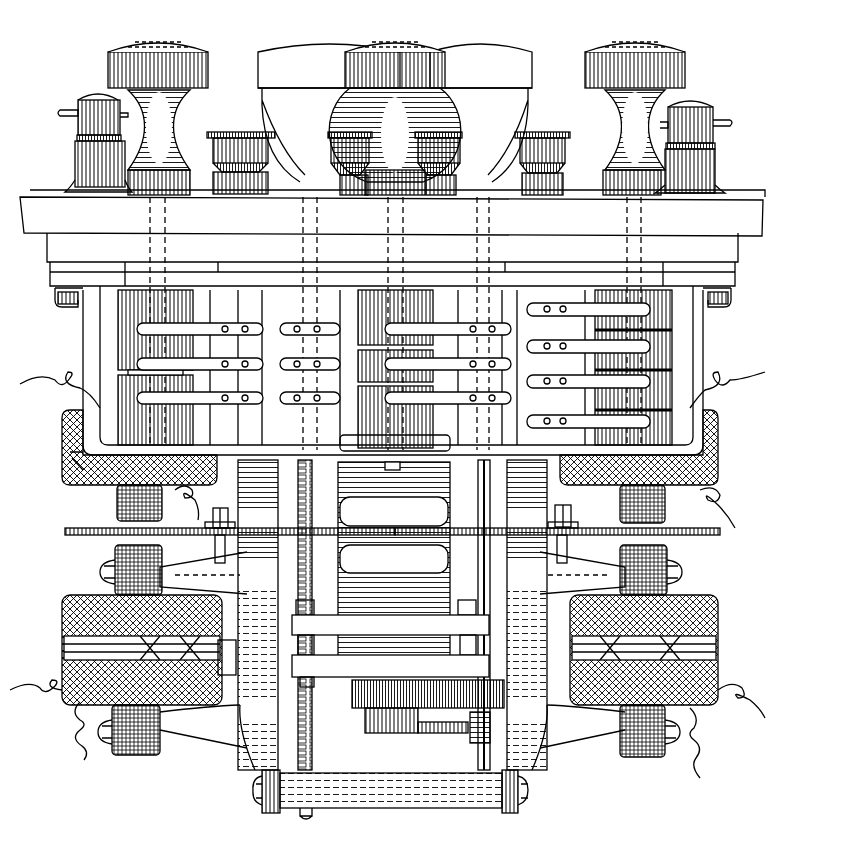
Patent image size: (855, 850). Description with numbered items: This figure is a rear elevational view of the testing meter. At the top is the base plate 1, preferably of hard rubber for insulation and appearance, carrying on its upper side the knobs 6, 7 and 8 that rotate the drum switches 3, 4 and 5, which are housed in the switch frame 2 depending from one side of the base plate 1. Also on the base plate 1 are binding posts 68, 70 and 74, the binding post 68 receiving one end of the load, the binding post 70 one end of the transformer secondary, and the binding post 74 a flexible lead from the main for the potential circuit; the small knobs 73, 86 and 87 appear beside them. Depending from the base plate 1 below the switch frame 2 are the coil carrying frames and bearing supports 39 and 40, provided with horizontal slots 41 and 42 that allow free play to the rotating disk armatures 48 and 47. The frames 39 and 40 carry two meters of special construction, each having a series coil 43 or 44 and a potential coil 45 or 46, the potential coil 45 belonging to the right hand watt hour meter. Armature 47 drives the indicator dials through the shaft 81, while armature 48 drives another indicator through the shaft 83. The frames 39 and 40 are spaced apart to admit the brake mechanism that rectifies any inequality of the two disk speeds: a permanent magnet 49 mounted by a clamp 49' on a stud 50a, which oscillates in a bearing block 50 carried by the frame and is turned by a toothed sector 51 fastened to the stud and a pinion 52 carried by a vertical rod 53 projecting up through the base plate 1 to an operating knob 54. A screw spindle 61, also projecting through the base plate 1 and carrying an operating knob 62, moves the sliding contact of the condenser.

The base plate 1 is at (392, 320).
The switch frame 2 is at (83, 344).
The drum switch 3 is at (229, 367).
The drum switch 4 is at (425, 370).
The drum switch 5 is at (599, 367).
The knob 6 is at (148, 44).
The knob 7 is at (378, 44).
The knob 8 is at (628, 44).
The coil carrying frame and bearing support 39 is at (566, 661).
The coil carrying frame and bearing support 40 is at (219, 661).
The horizontal slot 41 is at (527, 615).
The horizontal slot 42 is at (258, 615).
The series coil 43 is at (718, 448).
The series coil 44 is at (62, 430).
The potential coil 45 is at (718, 648).
The potential coil 46 is at (62, 648).
The rotating disk armature 47 is at (65, 530).
The rotating disk armature 48 is at (722, 529).
The permanent magnet 49 is at (394, 559).
The clamp 49' is at (401, 635).
The bearing block 50 is at (352, 694).
The stud 50a is at (370, 732).
The toothed sector 51 is at (425, 735).
The pinion 52 is at (470, 740).
The vertical rod 53 is at (480, 575).
The operating knob 54 is at (466, 44).
The screw spindle 61 is at (310, 575).
The operating knob 62 is at (290, 44).
The binding post 68 is at (75, 144).
The binding post 70 is at (716, 160).
The small knob 73 is at (241, 154).
The binding post 74 is at (350, 155).
The shaft 81 is at (215, 550).
The shaft 83 is at (567, 550).
The small knob 86 is at (438, 155).
The small knob 87 is at (542, 154).